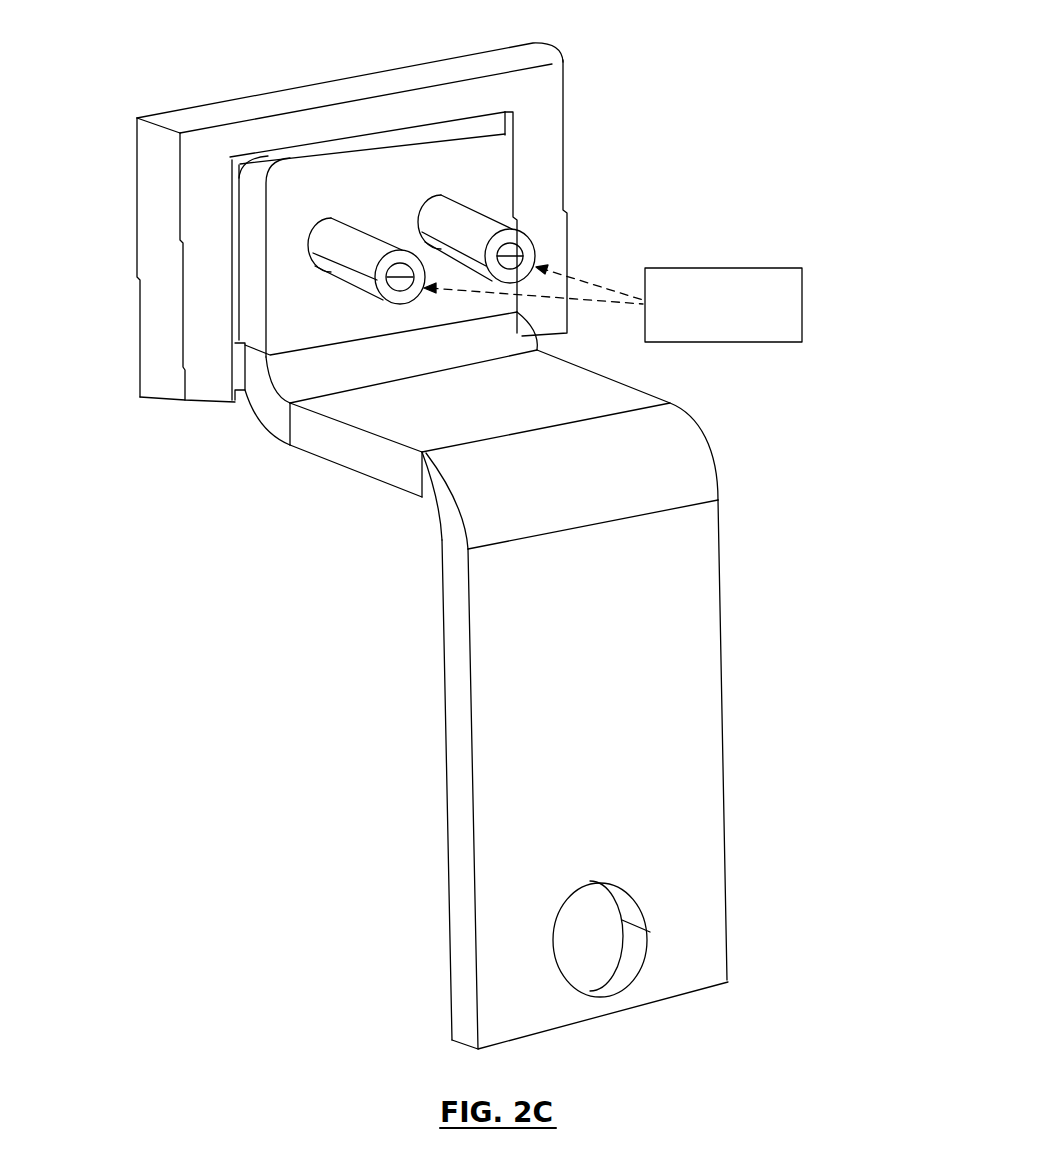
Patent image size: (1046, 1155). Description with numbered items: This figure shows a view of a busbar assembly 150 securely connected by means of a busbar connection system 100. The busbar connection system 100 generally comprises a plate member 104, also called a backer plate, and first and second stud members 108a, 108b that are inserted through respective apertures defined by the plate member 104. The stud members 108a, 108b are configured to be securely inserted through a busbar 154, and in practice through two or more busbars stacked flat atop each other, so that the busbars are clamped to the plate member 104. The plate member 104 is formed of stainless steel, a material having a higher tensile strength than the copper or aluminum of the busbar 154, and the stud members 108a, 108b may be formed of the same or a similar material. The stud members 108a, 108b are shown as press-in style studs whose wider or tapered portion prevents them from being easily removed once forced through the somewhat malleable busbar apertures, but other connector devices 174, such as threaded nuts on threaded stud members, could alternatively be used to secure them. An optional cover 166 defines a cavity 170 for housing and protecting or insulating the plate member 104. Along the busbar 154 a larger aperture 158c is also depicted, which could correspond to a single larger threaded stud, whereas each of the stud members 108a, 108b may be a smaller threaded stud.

The busbar connection system 100 is at (171, 475).
The plate member 104 is at (240, 175).
The first stud member 108a is at (486, 212).
The second stud member 108b is at (383, 242).
The busbar assembly 150 is at (834, 161).
The busbar 154 is at (724, 851).
The larger aperture 158c is at (653, 942).
The cover 166 is at (137, 187).
The cavity 170 is at (493, 127).
The other connector devices 174 is at (803, 272).